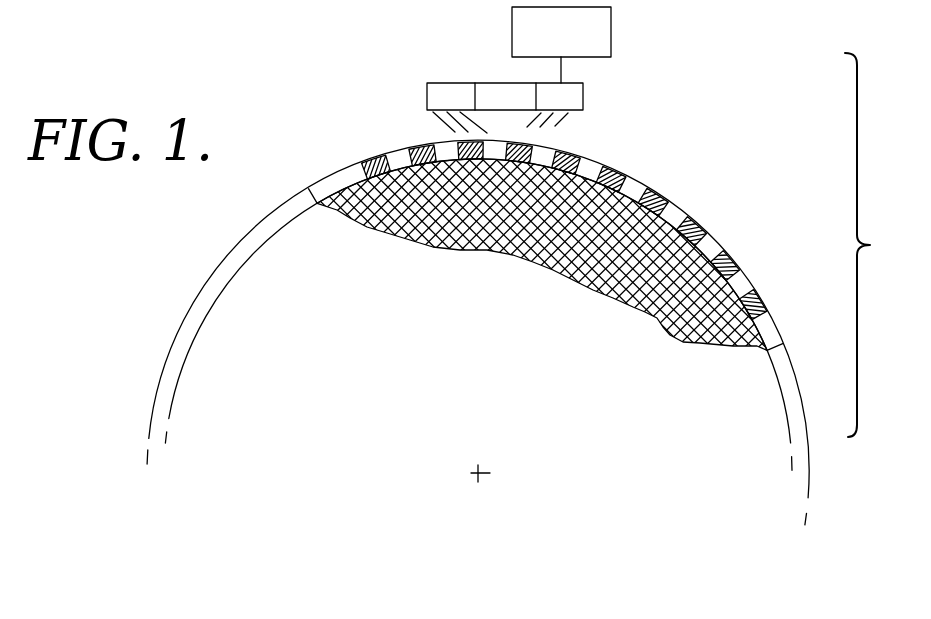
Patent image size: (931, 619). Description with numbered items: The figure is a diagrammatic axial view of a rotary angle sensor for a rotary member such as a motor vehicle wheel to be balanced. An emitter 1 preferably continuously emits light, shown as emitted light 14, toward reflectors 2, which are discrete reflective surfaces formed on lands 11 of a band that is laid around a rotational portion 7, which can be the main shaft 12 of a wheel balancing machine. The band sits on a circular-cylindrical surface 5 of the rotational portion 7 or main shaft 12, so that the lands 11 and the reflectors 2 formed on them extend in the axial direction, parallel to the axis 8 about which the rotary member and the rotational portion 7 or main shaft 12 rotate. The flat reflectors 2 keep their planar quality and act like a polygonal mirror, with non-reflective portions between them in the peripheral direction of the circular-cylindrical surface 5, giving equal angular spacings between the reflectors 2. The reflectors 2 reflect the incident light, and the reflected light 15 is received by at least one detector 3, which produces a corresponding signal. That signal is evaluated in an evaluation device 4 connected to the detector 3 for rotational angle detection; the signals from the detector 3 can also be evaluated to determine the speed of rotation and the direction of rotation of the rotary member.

The emitter 1 is at (511, 80).
The reflectors 2 is at (478, 322).
The detector 3 is at (583, 96).
The evaluation device 4 is at (611, 27).
The circular-cylindrical surface 5 is at (674, 216).
The rotational portion 7 is at (523, 281).
The axis 8 is at (481, 472).
The lands 11 is at (720, 252).
The main shaft 12 is at (690, 333).
The emitted light 14 is at (438, 114).
The reflected light 15 is at (568, 122).